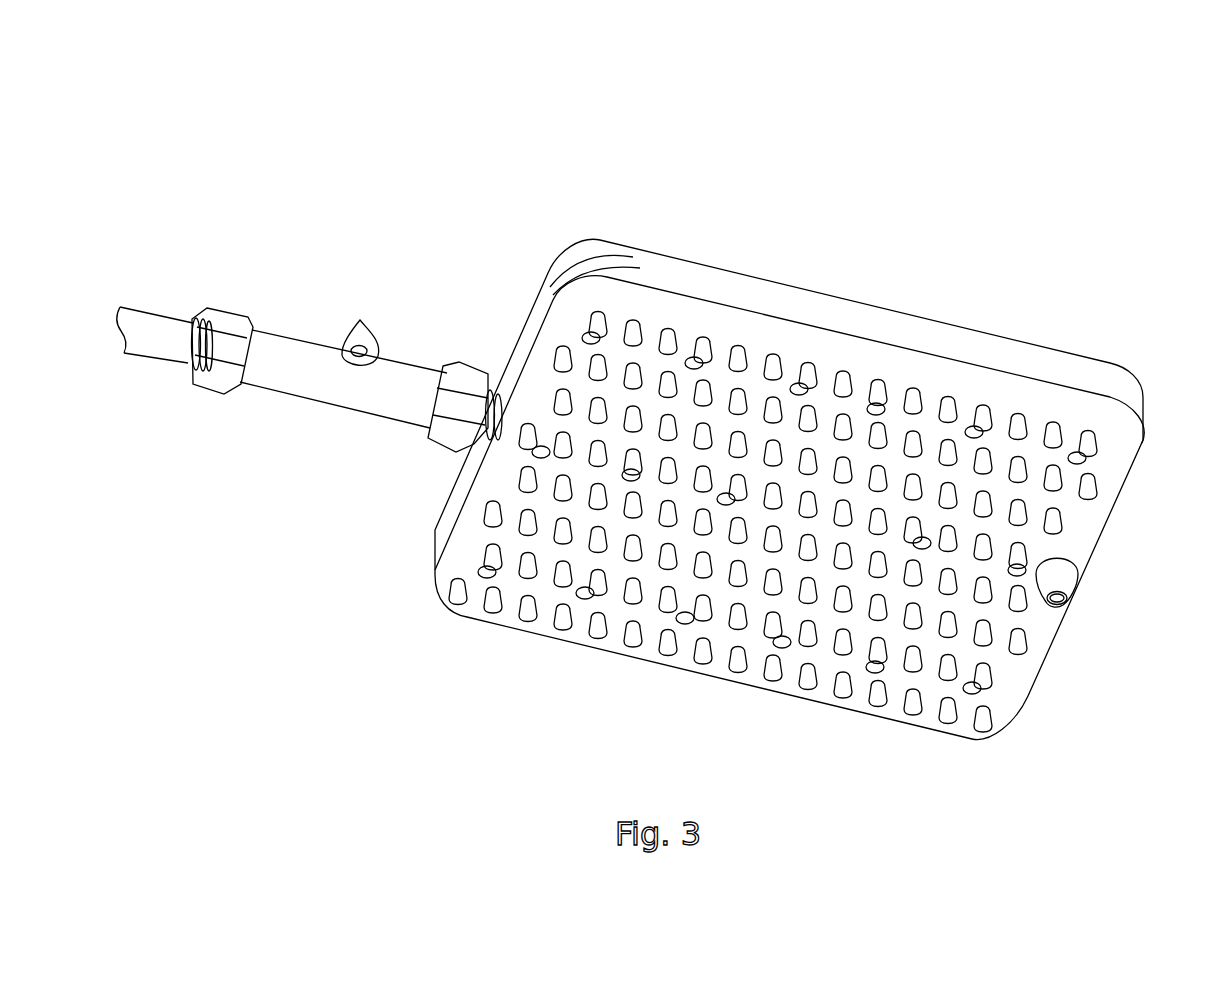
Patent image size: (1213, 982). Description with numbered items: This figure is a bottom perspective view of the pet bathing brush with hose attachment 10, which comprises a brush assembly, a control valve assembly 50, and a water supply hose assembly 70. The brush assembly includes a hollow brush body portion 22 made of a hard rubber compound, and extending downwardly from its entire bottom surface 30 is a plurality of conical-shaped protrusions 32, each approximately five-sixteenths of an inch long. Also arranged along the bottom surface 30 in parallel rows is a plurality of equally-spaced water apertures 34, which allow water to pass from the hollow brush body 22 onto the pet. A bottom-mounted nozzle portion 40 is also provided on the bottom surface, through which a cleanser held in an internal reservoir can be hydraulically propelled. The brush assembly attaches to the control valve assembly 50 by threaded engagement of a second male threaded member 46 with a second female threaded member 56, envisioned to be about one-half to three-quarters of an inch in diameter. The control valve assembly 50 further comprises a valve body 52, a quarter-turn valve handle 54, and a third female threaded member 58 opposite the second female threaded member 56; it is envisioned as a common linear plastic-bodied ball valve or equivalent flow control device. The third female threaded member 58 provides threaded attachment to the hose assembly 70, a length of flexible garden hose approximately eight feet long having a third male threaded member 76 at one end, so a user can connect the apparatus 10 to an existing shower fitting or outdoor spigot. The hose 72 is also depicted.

The pet bathing brush with hose attachment 10 is at (1062, 104).
The brush body portion 22 is at (978, 347).
The bottom surface 30 is at (781, 339).
The conical-shaped protrusions 32 is at (739, 356).
The water apertures 34 is at (583, 592).
The nozzle portion 40 is at (1058, 578).
The second male threaded member 46 is at (494, 392).
The control valve assembly 50 is at (307, 414).
The valve body 52 is at (375, 408).
The quarter-turn valve handle 54 is at (357, 337).
The second female threaded member 56 is at (463, 387).
The third female threaded member 58 is at (231, 331).
The hose assembly 70 is at (131, 304).
The hose 72 is at (158, 347).
The third male threaded member 76 is at (200, 322).